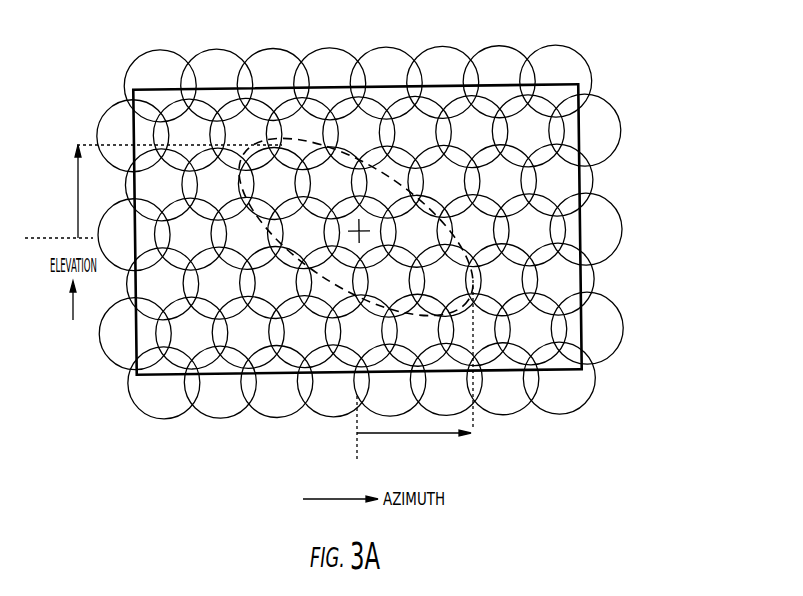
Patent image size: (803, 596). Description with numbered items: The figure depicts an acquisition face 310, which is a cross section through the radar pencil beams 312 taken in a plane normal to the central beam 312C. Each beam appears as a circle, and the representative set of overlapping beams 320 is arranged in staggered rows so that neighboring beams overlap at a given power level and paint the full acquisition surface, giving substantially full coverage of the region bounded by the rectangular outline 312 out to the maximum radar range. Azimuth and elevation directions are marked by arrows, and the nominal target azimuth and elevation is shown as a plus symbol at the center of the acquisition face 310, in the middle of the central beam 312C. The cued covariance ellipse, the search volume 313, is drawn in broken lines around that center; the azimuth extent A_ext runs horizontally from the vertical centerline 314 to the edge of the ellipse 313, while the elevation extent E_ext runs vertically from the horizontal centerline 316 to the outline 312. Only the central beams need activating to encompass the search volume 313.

The acquisition face 310 is at (371, 235).
The pencil beams 312 is at (620, 219).
The central beam 312C is at (410, 236).
The search volume 313 is at (387, 84).
The vertical centerline 314 is at (356, 423).
The horizontal centerline 316 is at (71, 237).
The beams 320 is at (181, 55).